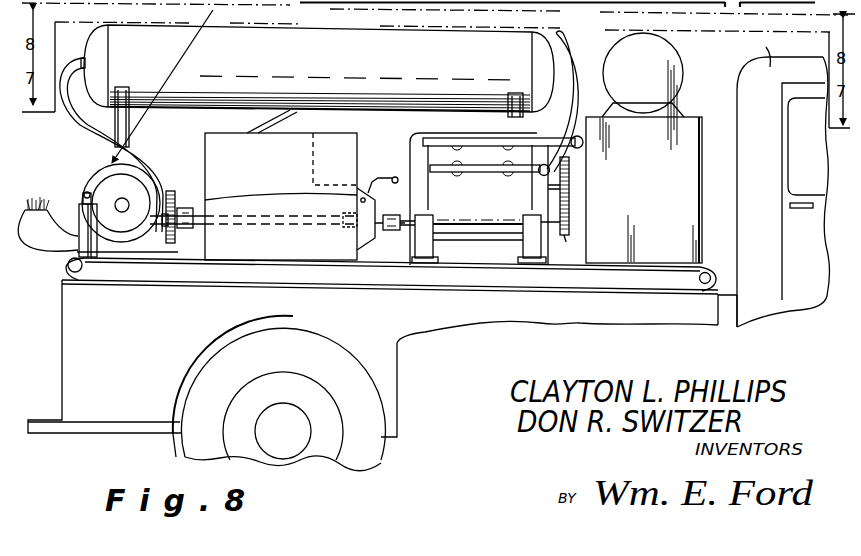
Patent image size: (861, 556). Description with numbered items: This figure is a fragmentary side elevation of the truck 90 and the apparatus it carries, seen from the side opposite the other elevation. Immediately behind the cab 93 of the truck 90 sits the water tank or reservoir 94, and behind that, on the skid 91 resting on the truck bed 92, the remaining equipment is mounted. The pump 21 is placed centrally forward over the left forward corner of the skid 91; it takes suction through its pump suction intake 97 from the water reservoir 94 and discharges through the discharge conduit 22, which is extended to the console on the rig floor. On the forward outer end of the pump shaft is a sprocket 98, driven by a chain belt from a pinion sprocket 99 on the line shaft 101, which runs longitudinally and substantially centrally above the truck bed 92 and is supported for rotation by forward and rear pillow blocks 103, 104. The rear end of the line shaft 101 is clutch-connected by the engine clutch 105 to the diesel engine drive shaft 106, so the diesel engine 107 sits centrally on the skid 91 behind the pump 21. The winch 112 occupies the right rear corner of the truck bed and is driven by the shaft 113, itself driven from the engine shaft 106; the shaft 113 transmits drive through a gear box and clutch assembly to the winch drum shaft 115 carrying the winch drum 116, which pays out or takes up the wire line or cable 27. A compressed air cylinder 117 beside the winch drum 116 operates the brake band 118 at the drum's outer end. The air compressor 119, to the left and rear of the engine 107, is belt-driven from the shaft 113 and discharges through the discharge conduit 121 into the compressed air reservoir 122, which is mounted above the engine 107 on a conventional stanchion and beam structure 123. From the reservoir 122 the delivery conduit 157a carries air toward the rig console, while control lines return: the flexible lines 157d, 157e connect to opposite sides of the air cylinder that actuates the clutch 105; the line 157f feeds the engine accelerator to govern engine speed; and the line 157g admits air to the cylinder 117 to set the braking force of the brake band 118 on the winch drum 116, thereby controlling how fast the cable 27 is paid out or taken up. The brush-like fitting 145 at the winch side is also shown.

The pump 21 is at (492, 200).
The discharge outlet or conduit 22 is at (583, 37).
The wire line or cable 27 is at (213, 15).
The truck 90 is at (740, 73).
The skid 91 is at (446, 282).
The truck bed 92 is at (124, 310).
The cab 93 is at (756, 51).
The water tank or reservoir 94 is at (652, 185).
The pump suction intake 97 is at (523, 138).
The sprocket 98 is at (570, 184).
The pinion sprocket 99 is at (569, 228).
The line shaft 101 is at (487, 225).
The forward pillow block 103 is at (530, 215).
The rear pillow block 104 is at (430, 215).
The engine clutch 105 is at (376, 220).
The diesel engine drive shaft 106 is at (265, 226).
The diesel engine 107 is at (266, 163).
The winch 112 is at (111, 158).
The shaft 113 is at (166, 240).
The winch drum shaft 115 is at (137, 183).
The winch drum 116 is at (128, 228).
The compressed air cylinder 117 is at (84, 200).
The brake band 118 is at (99, 165).
The air compressor 119 is at (196, 244).
The discharge conduit 121 is at (266, 114).
The compressed air reservoir or chamber 122 is at (330, 55).
The stanchion and beam structure 123 is at (507, 115).
The brush nozzle 145 is at (53, 240).
The delivery conduit 157a is at (40, 190).
The flexible line 157d is at (196, 186).
The flexible line 157e is at (305, 197).
The compressed air conduit or line 157f is at (184, 192).
The compressed air conduit or line 157g is at (80, 214).